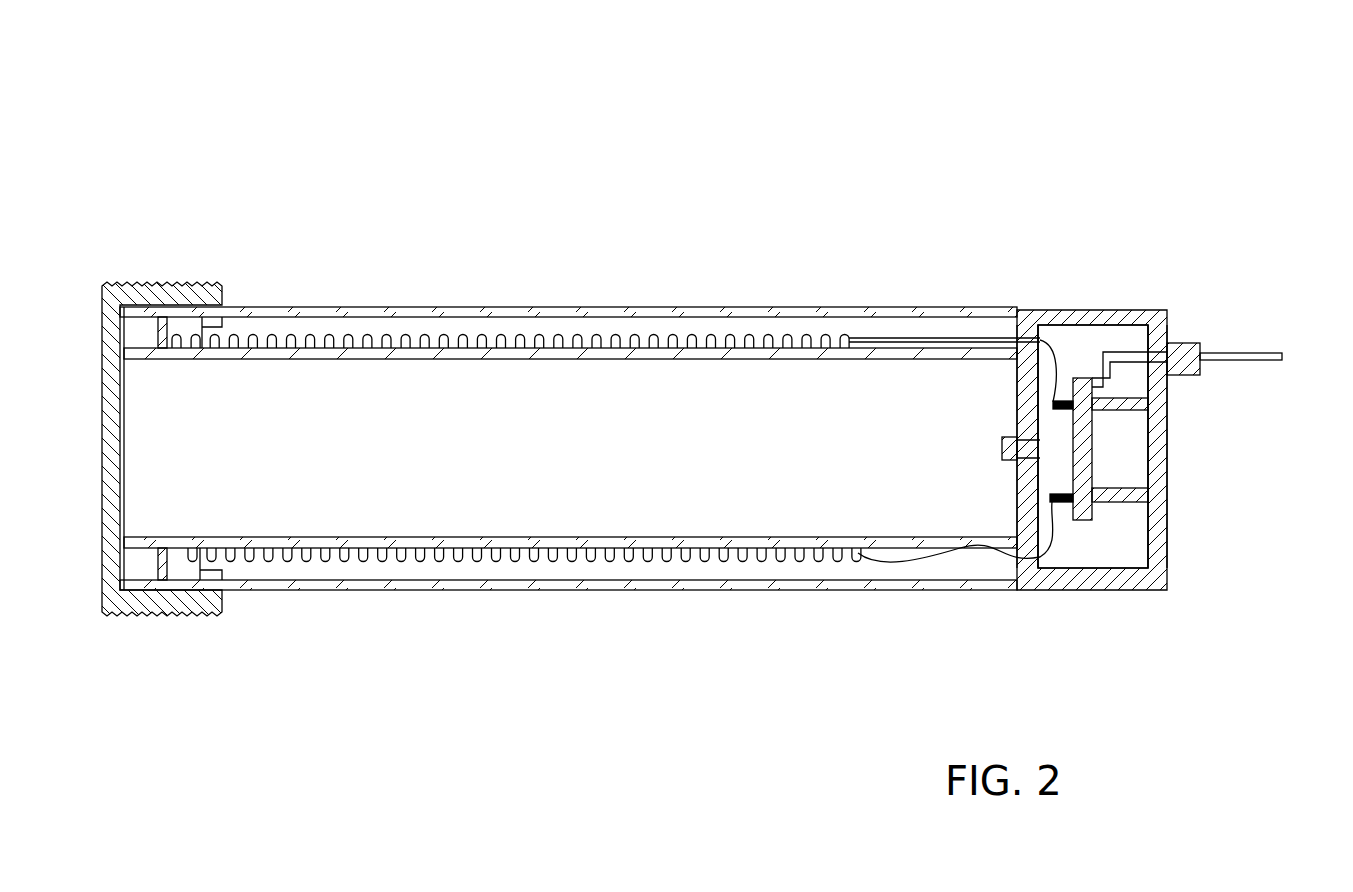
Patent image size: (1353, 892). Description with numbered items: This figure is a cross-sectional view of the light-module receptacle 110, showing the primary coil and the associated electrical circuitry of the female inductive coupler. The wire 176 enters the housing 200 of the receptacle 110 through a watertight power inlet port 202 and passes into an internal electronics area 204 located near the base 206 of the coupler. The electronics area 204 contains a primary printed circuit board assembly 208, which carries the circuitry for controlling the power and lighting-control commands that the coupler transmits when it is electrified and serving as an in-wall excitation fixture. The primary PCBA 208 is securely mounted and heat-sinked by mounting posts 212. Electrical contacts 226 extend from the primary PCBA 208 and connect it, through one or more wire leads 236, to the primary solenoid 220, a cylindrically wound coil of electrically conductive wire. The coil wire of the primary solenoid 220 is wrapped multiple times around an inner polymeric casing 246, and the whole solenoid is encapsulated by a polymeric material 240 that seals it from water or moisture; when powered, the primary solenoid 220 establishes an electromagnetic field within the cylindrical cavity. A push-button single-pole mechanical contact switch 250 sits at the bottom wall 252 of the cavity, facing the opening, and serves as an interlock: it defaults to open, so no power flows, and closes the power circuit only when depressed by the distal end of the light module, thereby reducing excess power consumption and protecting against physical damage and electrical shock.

The receptacle 110 is at (258, 91).
The housing 200 is at (178, 278).
The polymeric material 240 is at (303, 338).
The inner polymeric casing 246 is at (375, 360).
The primary solenoid 220 is at (792, 548).
The base 206 is at (1168, 545).
The internal electronics area 204 is at (1128, 568).
The wire leads 236 is at (1050, 328).
The mounting posts 212 is at (1165, 410).
The watertight power inlet port 202 is at (1178, 343).
The wire 176 is at (1282, 353).
The primary printed circuit board assembly 208 is at (1083, 378).
The bottom wall 252 is at (1022, 400).
The electrical contacts 226 is at (1050, 496).
The contact switch 250 is at (1003, 437).